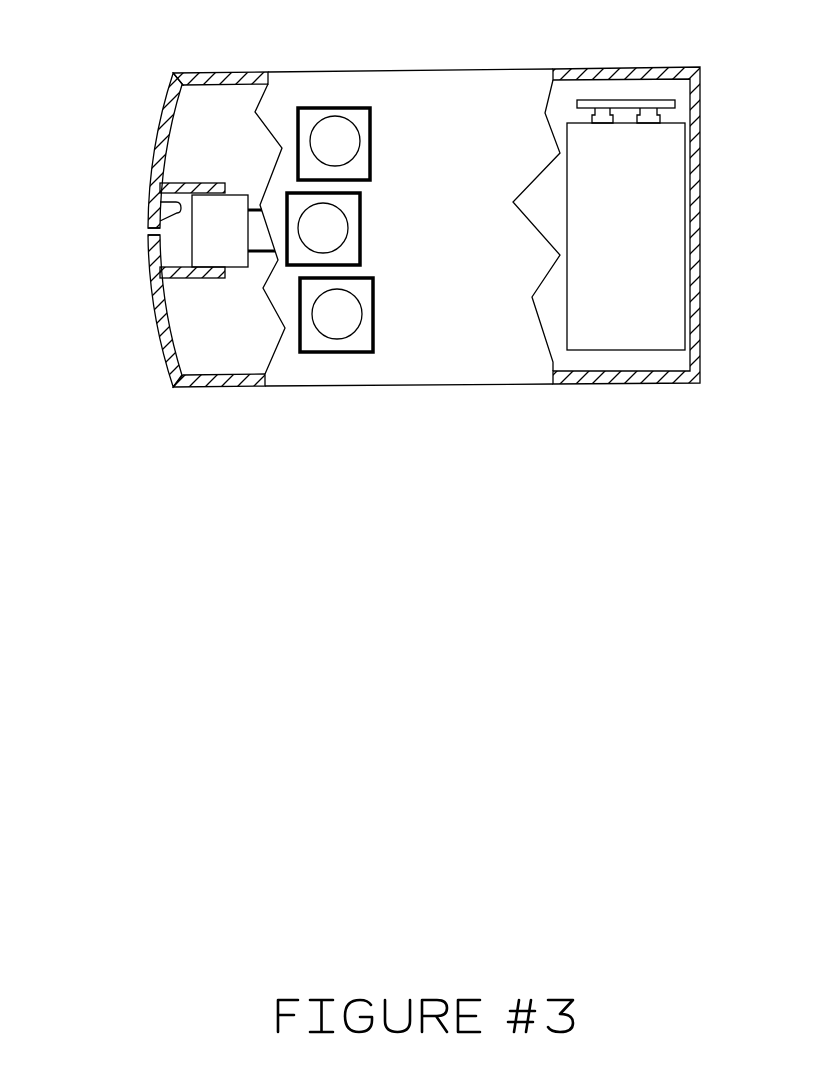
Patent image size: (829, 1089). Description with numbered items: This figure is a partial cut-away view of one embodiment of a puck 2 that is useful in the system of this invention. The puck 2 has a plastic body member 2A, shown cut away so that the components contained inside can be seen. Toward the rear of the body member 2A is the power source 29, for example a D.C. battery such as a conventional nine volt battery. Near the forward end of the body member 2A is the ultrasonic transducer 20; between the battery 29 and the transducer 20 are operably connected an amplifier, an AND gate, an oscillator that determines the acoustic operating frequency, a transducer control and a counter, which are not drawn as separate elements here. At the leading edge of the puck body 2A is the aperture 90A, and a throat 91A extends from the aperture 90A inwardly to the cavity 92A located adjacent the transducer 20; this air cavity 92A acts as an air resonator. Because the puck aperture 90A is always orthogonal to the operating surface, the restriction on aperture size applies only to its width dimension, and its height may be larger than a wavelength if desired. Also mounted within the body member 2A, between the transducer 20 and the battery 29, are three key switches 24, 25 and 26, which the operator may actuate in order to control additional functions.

The puck 2 is at (368, 193).
The plastic body member 2A is at (507, 69).
The ultrasonic transducer 20 is at (222, 248).
The key switch 24 is at (333, 328).
The key switch 25 is at (330, 237).
The key switch 26 is at (335, 133).
The power source 29 is at (641, 255).
The aperture 90A is at (152, 237).
The throat 91A is at (150, 231).
The cavity 92A is at (160, 206).